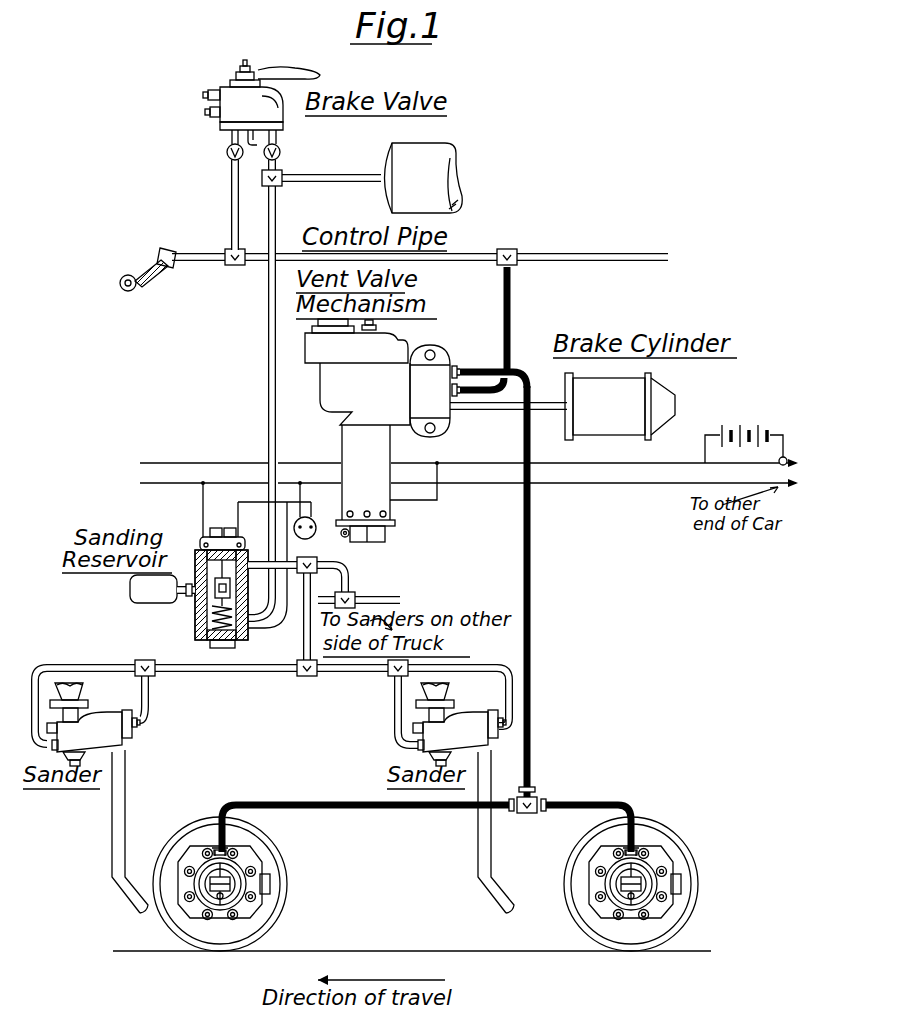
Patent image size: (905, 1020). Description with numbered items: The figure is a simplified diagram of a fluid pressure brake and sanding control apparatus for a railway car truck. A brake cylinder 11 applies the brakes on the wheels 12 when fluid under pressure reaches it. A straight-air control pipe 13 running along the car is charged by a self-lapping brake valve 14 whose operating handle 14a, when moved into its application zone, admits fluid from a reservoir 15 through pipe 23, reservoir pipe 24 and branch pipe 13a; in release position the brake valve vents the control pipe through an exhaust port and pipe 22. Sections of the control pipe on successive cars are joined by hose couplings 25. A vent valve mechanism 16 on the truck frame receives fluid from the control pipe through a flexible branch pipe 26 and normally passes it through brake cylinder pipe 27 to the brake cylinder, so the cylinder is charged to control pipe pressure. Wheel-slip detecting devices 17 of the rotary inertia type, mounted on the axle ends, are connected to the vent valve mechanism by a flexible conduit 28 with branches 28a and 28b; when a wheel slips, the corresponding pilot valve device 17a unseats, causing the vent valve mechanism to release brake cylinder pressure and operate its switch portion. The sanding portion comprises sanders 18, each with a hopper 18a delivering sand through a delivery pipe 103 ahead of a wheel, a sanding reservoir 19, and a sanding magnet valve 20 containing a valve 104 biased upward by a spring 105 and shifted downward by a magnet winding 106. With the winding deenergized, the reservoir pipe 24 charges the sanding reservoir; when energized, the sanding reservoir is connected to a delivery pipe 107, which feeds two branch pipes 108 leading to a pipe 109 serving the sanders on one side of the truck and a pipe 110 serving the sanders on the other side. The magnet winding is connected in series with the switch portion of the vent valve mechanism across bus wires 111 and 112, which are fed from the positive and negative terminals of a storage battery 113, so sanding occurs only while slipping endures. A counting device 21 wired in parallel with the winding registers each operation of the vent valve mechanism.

The brake cylinder 11 is at (668, 390).
The wheels 12 is at (451, 884).
The control pipe 13 is at (638, 253).
The branch pipe 13a is at (232, 213).
The brake valve 14 is at (212, 86).
The operating handle 14a is at (301, 71).
The reservoir 15 is at (443, 160).
The vent valve mechanism 16 is at (405, 345).
The wheel-slip detecting devices 17 is at (242, 877).
The pilot valve device 17a is at (262, 892).
The sanders 18 is at (283, 727).
The hopper 18a is at (84, 690).
The sanding reservoir 19 is at (127, 591).
The sanding magnet valve 20 is at (220, 578).
The counting device 21 is at (298, 537).
The exhaust port and pipe 22 is at (246, 138).
The pipe 23 is at (346, 180).
The reservoir pipe 24 is at (277, 207).
The hose couplings 25 is at (150, 268).
The flexible branch pipe 26 is at (512, 301).
The brake cylinder pipe 27 is at (470, 410).
The flexible conduit 28 is at (522, 511).
The branch 28a is at (287, 805).
The branch 28b is at (578, 806).
The delivery pipe 103 is at (121, 833).
The valve 104 is at (212, 598).
The spring 105 is at (237, 643).
The magnet winding 106 is at (262, 534).
The delivery pipe 107 is at (289, 572).
The branch pipes 108 is at (337, 575).
The pipe 109 is at (200, 674).
The pipe 110 is at (389, 601).
The bus wire 111 is at (176, 470).
The bus wire 112 is at (248, 491).
The storage battery 113 is at (731, 432).